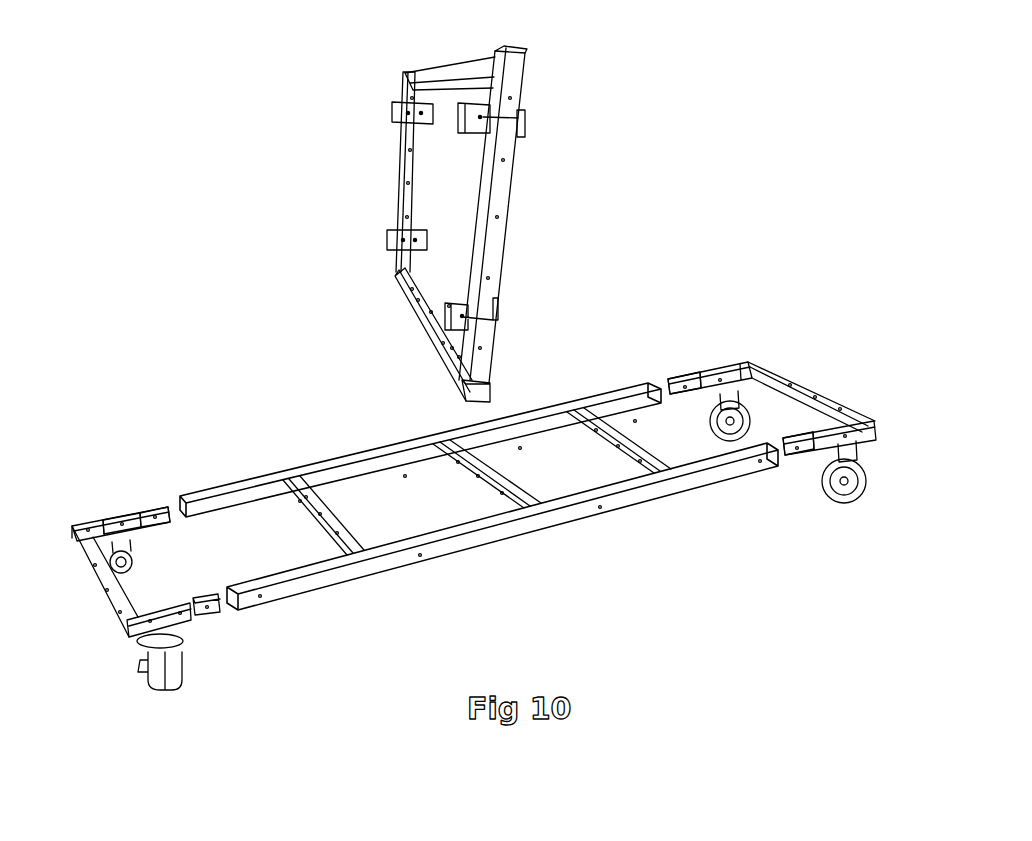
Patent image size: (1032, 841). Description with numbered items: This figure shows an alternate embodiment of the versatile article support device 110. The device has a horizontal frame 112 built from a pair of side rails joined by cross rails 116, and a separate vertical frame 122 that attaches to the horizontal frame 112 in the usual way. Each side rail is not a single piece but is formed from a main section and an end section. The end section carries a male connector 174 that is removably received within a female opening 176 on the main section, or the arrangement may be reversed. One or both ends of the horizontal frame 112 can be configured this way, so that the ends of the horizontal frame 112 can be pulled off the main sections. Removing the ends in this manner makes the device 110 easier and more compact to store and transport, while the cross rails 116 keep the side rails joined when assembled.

The versatile article support device 110 is at (478, 488).
The horizontal frame 112 is at (616, 449).
The cross rails 116 is at (118, 592).
The vertical frame 122 is at (515, 173).
The male connector 174 is at (678, 378).
The female opening 176 is at (152, 498).